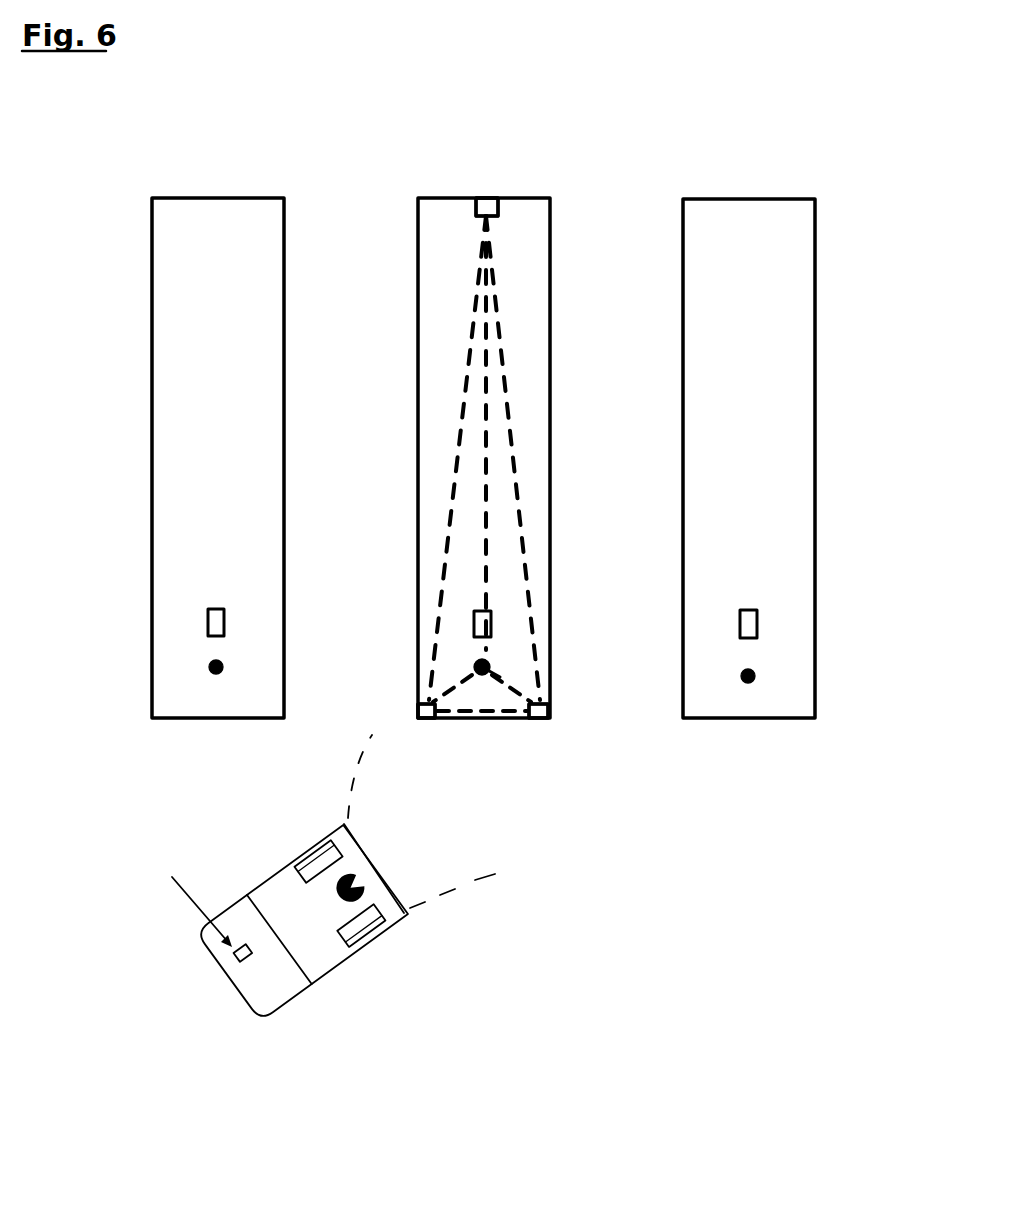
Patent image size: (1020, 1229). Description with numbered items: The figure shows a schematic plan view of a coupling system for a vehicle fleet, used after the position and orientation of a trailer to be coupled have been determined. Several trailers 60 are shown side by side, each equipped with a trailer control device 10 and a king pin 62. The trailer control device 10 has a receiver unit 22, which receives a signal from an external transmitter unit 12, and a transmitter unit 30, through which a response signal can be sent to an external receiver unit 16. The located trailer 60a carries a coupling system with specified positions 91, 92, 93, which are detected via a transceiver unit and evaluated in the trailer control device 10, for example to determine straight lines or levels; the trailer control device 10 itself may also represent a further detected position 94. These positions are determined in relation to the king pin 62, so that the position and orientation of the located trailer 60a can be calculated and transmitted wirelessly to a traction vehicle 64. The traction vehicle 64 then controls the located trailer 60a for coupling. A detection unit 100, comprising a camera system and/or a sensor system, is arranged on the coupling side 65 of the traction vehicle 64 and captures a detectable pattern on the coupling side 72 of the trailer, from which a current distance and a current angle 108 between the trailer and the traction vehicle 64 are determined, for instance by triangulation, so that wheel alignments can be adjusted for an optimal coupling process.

The trailer control device 10 is at (226, 621).
The transmitter unit 12 is at (180, 956).
The receiver unit 16 is at (232, 958).
The receiver unit 22 is at (466, 192).
The transmitter unit 30 is at (504, 407).
The trailer 60 is at (232, 207).
The located trailer 60a is at (528, 198).
The king pin 62 is at (216, 675).
The traction vehicle 64 is at (353, 955).
The coupling side 65 is at (378, 858).
The coupling side 72 is at (520, 720).
The specified position 91 is at (488, 198).
The specified position 92 is at (547, 720).
The specified position 93 is at (412, 720).
The detected position 94 is at (486, 612).
The detection unit 100 is at (505, 866).
The current angle 108 is at (457, 723).